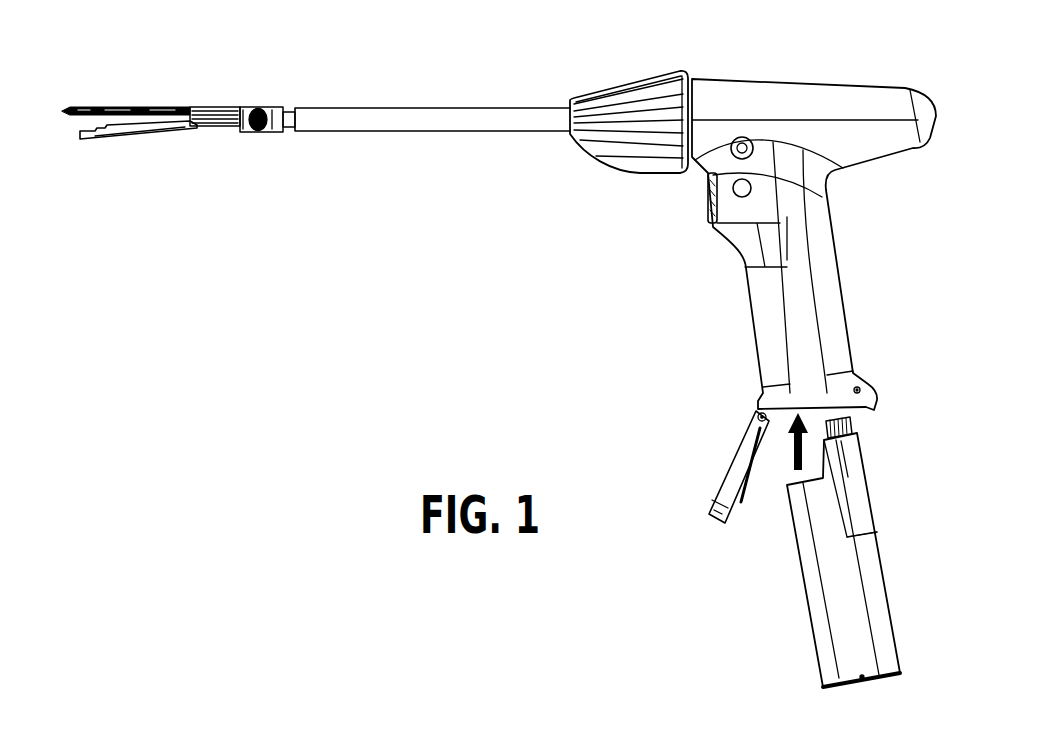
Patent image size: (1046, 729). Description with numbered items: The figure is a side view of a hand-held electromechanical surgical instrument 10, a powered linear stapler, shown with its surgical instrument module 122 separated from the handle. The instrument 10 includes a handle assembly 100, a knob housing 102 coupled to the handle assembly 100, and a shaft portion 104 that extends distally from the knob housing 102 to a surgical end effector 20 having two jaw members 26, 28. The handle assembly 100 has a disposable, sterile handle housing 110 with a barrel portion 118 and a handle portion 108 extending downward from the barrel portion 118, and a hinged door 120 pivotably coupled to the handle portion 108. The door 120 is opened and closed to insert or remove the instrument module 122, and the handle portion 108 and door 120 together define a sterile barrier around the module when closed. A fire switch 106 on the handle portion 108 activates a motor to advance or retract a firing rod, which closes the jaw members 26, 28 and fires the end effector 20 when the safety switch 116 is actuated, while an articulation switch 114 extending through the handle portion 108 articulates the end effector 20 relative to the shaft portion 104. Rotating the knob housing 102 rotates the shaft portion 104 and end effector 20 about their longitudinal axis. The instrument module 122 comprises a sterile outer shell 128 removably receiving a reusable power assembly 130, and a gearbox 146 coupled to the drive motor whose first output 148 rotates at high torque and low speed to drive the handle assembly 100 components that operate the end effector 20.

The surgical instrument 10 is at (577, 42).
The surgical end effector 20 is at (151, 136).
The jaw member 26 is at (150, 107).
The jaw member 28 is at (165, 130).
The handle assembly 100 is at (784, 277).
The knob housing 102 is at (624, 88).
The shaft portion 104 is at (390, 116).
The fire switch 106 is at (706, 203).
The handle portion 108 is at (838, 293).
The handle housing 110 is at (830, 187).
The articulation switch 114 is at (743, 197).
The safety switch 116 is at (742, 140).
The barrel portion 118 is at (812, 90).
The hinged door 120 is at (745, 432).
The surgical instrument module 122 is at (842, 547).
The outer shell 128 is at (813, 637).
The power assembly 130 is at (888, 525).
The gearbox 146 is at (857, 452).
The first output 148 is at (854, 425).